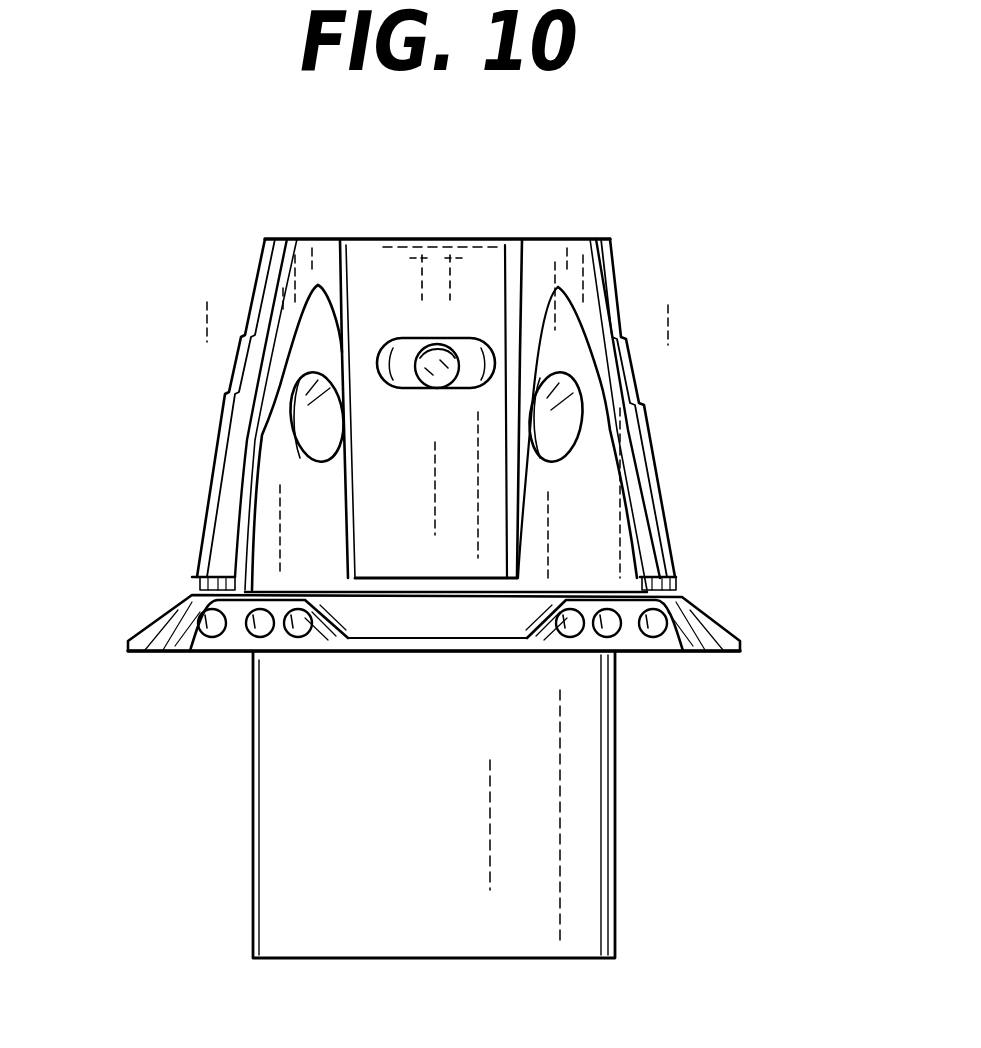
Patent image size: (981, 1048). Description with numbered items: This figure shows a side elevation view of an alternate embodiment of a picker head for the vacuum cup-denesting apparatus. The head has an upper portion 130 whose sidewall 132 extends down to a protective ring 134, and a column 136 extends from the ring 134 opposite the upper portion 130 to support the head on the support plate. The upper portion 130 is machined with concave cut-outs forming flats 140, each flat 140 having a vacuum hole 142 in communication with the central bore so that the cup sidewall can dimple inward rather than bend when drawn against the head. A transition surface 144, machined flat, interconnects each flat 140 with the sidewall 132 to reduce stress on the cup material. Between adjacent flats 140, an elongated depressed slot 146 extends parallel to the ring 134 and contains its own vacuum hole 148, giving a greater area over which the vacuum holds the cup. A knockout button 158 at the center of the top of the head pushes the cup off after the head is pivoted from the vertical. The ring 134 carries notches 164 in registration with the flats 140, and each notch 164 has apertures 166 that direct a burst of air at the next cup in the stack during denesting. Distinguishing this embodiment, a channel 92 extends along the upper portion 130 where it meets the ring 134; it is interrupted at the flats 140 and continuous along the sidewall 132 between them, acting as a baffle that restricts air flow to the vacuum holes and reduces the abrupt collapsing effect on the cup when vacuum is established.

The upper portion 130 is at (460, 354).
The sidewall 132 is at (627, 307).
The protective ring 134 is at (436, 671).
The column 136 is at (252, 826).
The flat 140 is at (265, 518).
The vacuum hole 142 is at (312, 417).
The transition surface 144 is at (649, 215).
The slot 146 is at (491, 346).
The vacuum hole 148 is at (414, 356).
The knockout button 158 is at (455, 228).
The channel 92 is at (200, 588).
The notch 164 is at (222, 654).
The aperture 166 is at (247, 630).